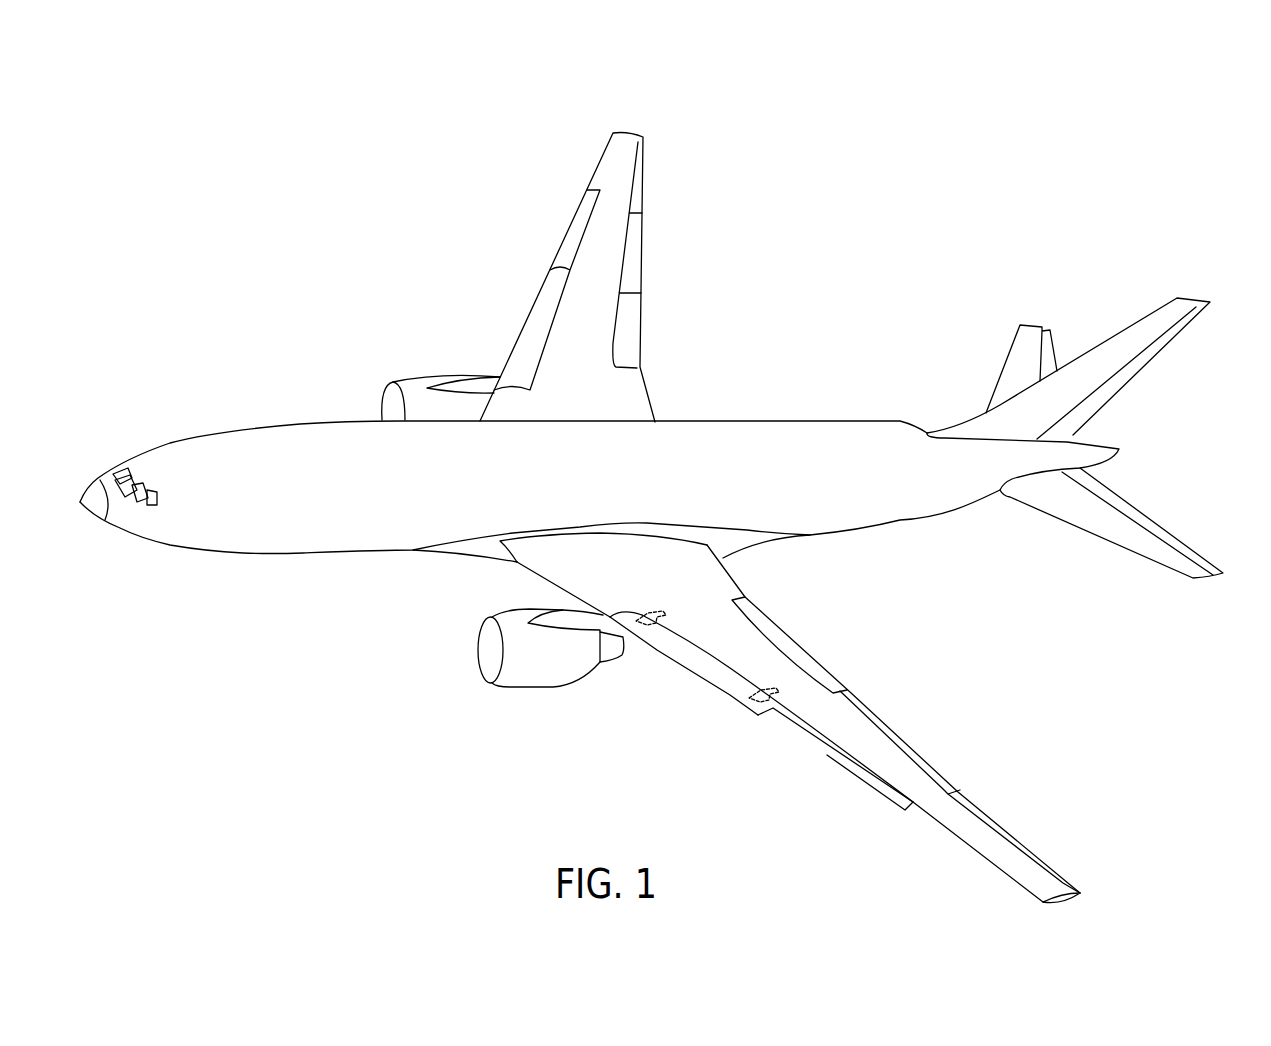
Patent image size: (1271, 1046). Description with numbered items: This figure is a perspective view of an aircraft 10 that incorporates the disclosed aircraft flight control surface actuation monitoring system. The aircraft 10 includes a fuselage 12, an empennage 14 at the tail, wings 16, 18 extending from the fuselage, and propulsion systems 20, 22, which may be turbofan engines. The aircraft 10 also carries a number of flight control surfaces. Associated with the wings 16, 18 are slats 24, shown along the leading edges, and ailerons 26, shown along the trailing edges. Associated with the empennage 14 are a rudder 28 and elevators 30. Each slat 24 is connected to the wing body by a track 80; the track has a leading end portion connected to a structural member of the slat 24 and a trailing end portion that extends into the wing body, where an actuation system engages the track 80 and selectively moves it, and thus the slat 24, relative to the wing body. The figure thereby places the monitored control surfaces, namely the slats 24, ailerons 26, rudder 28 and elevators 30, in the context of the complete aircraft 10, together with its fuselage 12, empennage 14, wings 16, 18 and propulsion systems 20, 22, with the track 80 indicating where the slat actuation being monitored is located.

The aircraft 10 is at (922, 150).
The fuselage 12 is at (711, 421).
The empennage 14 is at (1168, 258).
The wing 16 is at (1063, 905).
The wing 18 is at (633, 131).
The propulsion system 20 is at (531, 690).
The propulsion system 22 is at (405, 380).
The slat 24 is at (574, 237).
The aileron 26 is at (634, 253).
The rudder 28 is at (1148, 353).
The elevator 30 is at (1048, 349).
The track 80 is at (650, 612).